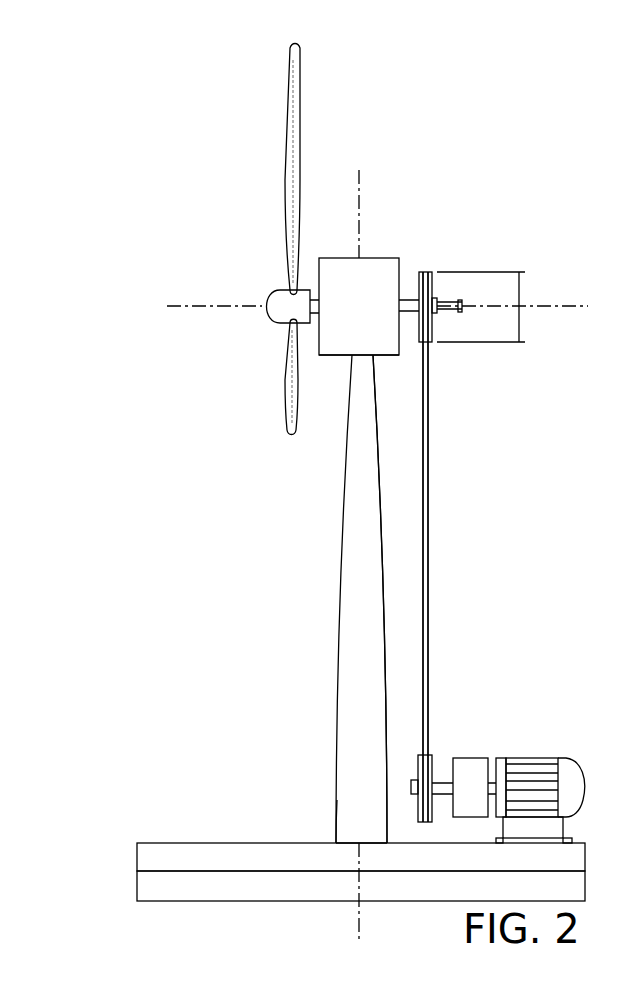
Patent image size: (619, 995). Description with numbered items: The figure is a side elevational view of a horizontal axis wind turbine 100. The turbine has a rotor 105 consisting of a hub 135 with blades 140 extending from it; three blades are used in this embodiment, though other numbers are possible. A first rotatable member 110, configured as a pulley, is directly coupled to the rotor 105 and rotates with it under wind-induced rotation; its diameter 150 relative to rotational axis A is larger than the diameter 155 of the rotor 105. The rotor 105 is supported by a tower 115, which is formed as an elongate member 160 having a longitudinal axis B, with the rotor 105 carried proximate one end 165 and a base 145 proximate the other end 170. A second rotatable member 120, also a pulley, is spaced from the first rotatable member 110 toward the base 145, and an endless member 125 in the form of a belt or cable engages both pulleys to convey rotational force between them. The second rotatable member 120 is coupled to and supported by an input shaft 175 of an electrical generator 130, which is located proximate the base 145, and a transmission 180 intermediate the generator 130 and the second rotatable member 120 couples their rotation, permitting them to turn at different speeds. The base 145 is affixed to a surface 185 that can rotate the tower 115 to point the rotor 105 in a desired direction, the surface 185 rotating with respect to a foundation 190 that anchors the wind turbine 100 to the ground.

The horizontal axis wind turbine 100 is at (187, 78).
The rotor 105 is at (420, 272).
The first rotatable member 110 is at (428, 272).
The tower 115 is at (344, 535).
The second rotatable member 120 is at (431, 780).
The endless member 125 is at (423, 490).
The electrical generator 130 is at (567, 758).
The hub 135 is at (268, 293).
The blades 140 is at (285, 130).
The base 145 is at (336, 840).
The diameter of the first rotatable member 150 is at (520, 293).
The diameter of the rotor 155 is at (460, 304).
The elongate member 160 is at (362, 568).
The one end 165 is at (360, 355).
The other end 170 is at (361, 843).
The input shaft 175 is at (441, 780).
The transmission 180 is at (487, 758).
The surface 185 is at (168, 843).
The foundation 190 is at (137, 884).